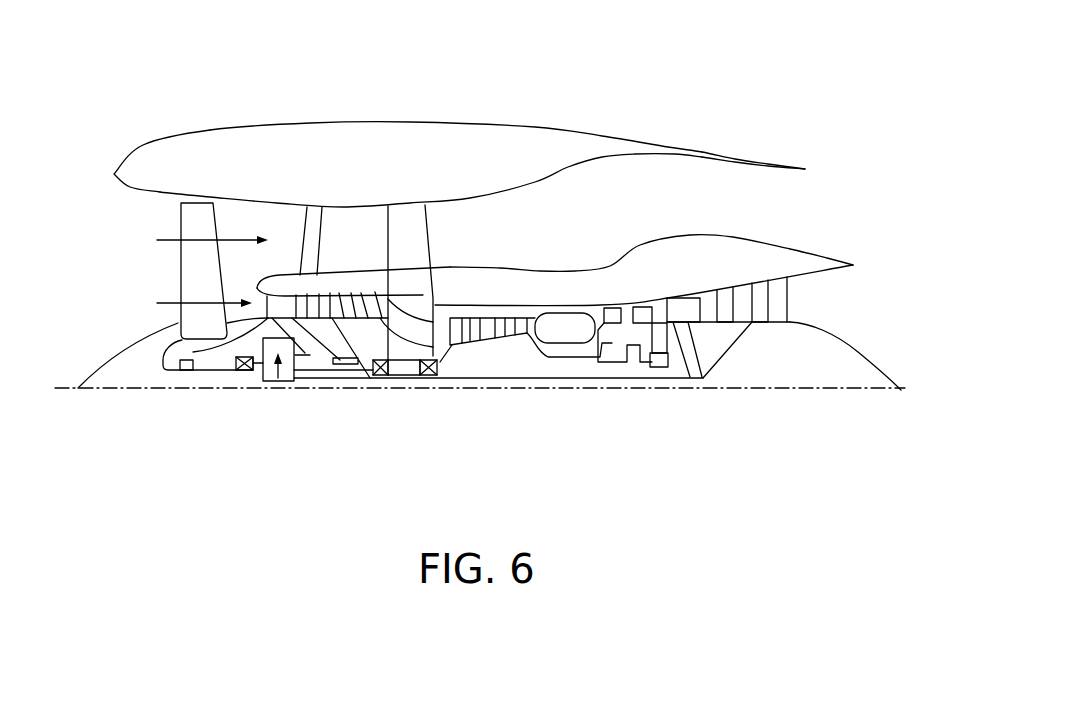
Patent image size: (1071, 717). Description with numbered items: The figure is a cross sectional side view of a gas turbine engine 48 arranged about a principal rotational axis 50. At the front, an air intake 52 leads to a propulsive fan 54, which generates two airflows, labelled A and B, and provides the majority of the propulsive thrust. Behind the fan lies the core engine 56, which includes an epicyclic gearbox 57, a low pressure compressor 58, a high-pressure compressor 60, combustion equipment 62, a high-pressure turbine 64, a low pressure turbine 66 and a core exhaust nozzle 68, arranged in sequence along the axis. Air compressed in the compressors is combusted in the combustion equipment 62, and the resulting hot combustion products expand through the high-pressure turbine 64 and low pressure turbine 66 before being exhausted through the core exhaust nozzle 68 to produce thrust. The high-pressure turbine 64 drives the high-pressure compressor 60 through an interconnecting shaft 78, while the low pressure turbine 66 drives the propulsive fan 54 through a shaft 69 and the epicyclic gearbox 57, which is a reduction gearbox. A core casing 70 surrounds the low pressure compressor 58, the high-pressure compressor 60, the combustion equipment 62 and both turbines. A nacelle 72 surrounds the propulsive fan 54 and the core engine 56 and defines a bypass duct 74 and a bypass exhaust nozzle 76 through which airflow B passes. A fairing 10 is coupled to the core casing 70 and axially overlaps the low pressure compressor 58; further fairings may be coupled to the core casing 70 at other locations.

The fairing 10 is at (292, 270).
The gas turbine engine 48 is at (885, 92).
The principal rotational axis 50 is at (759, 392).
The air intake 52 is at (125, 205).
The propulsive fan 54 is at (190, 274).
The core engine 56 is at (556, 288).
The epicyclic gearbox 57 is at (278, 381).
The low pressure compressor 58 is at (347, 297).
The high-pressure compressor 60 is at (493, 325).
The combustion equipment 62 is at (575, 335).
The high-pressure turbine 64 is at (632, 305).
The low pressure turbine 66 is at (760, 284).
The core exhaust nozzle 68 is at (830, 296).
The shaft 69 is at (483, 379).
The core casing 70 is at (613, 299).
The nacelle 72 is at (429, 137).
The bypass duct 74 is at (677, 210).
The bypass exhaust nozzle 76 is at (778, 187).
The interconnecting shaft 78 is at (583, 357).